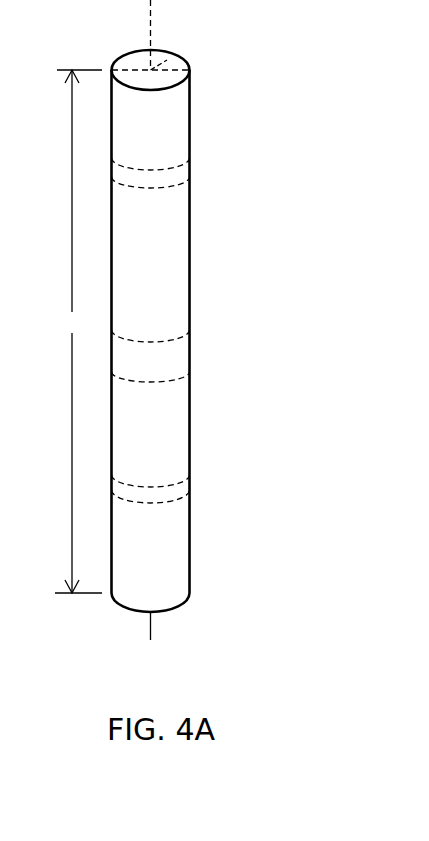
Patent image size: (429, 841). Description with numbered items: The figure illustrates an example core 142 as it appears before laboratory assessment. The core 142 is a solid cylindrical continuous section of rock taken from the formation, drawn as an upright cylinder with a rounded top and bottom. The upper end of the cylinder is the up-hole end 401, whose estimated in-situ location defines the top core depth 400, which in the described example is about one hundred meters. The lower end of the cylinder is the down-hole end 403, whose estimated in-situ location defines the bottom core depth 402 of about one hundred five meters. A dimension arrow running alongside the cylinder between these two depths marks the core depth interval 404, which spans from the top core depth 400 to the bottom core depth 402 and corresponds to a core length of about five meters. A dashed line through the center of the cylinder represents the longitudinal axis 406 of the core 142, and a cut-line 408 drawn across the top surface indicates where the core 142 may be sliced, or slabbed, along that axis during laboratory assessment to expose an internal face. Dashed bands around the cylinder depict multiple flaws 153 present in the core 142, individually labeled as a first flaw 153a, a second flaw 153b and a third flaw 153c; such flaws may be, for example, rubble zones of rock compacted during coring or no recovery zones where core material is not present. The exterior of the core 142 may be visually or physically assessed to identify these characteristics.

The core 142 is at (181, 320).
The flaws 153 is at (213, 169).
The flaw 153a is at (194, 165).
The flaw 153b is at (194, 340).
The flaw 153c is at (194, 478).
The top core depth 400 is at (53, 68).
The up-hole end 401 is at (193, 82).
The bottom core depth 402 is at (55, 593).
The down-hole end 403 is at (199, 595).
The core depth interval 404 is at (71, 331).
The longitudinal axis 406 is at (152, 22).
The cut-line 408 is at (167, 49).